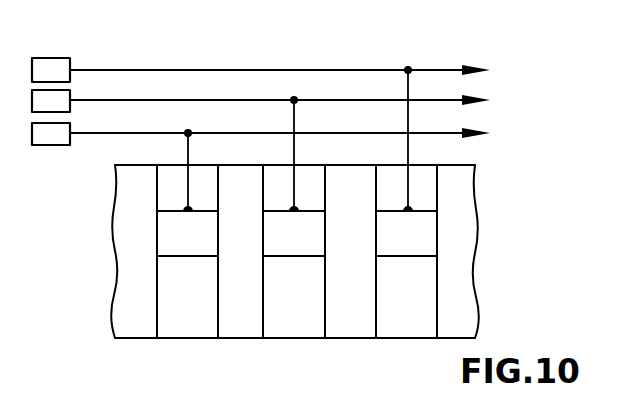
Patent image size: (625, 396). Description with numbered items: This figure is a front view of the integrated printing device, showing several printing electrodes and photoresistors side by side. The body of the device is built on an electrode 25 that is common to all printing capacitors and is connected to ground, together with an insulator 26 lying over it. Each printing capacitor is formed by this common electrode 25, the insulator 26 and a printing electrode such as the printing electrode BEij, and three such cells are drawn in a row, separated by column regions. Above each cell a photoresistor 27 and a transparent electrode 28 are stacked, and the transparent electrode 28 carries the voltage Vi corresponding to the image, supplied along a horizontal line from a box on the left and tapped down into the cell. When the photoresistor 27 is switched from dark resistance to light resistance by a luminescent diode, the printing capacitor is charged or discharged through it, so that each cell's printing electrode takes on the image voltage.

The voltage corresponding to the image Vi is at (60, 63).
The electrode 25 is at (256, 251).
The insulator 26 is at (125, 233).
The photoresistor 27 is at (136, 268).
The transparent electrode 28 is at (188, 246).
The printing electrode BEij is at (163, 325).